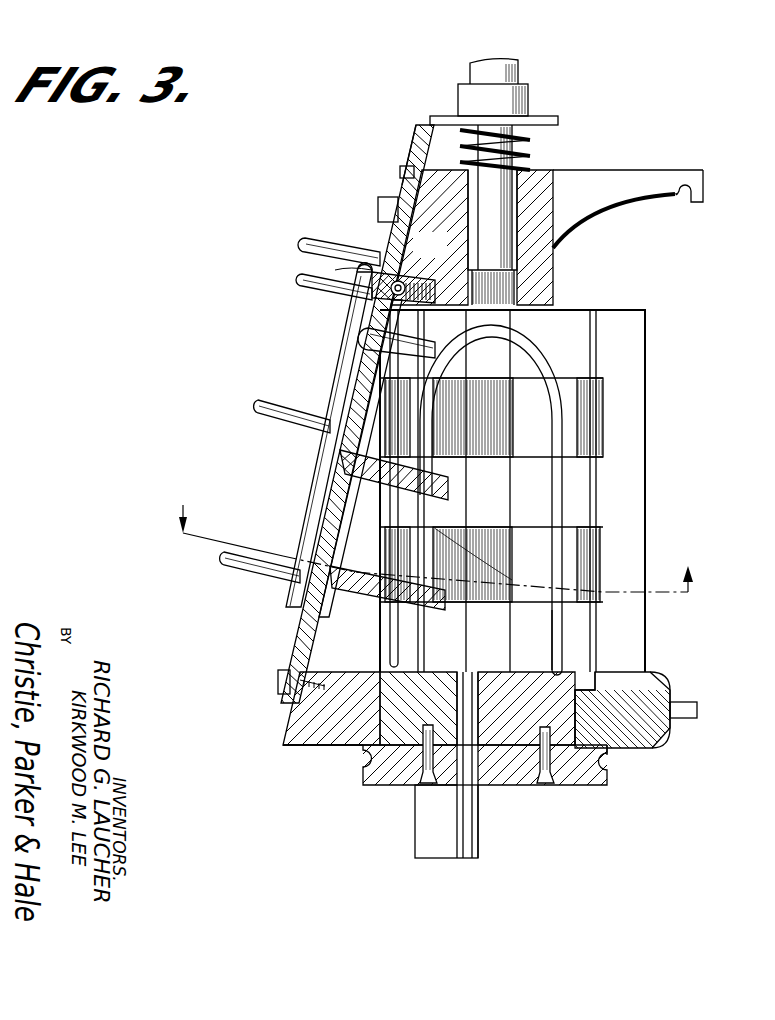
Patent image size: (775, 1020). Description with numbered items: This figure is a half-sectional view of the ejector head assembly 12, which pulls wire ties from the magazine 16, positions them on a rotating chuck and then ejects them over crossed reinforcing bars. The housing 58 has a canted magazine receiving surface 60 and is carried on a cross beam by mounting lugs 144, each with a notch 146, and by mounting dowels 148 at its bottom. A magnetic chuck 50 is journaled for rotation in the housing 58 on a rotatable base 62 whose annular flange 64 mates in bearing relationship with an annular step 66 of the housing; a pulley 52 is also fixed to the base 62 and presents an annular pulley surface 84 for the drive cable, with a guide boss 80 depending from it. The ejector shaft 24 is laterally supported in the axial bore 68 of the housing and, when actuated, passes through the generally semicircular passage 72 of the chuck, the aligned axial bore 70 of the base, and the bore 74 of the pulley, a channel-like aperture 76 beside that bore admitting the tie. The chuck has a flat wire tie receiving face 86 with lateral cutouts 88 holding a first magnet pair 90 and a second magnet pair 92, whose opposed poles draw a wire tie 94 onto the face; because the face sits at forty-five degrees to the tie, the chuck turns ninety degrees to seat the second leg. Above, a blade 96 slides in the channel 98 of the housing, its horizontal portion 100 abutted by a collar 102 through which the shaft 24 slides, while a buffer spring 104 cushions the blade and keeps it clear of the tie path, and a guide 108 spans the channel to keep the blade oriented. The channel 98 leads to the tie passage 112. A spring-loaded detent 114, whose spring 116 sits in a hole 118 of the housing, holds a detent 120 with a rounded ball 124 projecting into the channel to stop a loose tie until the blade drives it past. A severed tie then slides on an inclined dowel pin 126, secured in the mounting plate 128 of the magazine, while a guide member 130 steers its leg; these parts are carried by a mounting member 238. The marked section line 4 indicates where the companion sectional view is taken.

The ejector head assembly 12 is at (600, 162).
The magazine 16 is at (272, 302).
The ejector shaft 24 is at (522, 76).
The magnetic chuck 50 is at (647, 390).
The pulley 52 is at (608, 790).
The housing 58 is at (557, 226).
The canted magazine receiving surface 60 is at (283, 710).
The rotatable base 62 is at (362, 760).
The annular flange 64 is at (648, 676).
The annular step 66 is at (672, 697).
The axial bore 68 is at (520, 300).
The axial bore 70 is at (494, 662).
The passage 72 is at (496, 496).
The bore 74 is at (500, 803).
The channel-like aperture 76 is at (478, 856).
The guide boss 80 is at (440, 822).
The annular pulley surface 84 is at (612, 765).
The wire tie receiving face 86 is at (590, 638).
The lateral cutouts 88 is at (605, 540).
The first magnet pair 90 is at (508, 422).
The second magnet pair 92 is at (540, 568).
The wire tie 94 is at (462, 640).
The blade 96 is at (420, 128).
The channel 98 is at (408, 182).
The horizontal portion 100 is at (560, 121).
The collar 102 is at (532, 102).
The buffer spring 104 is at (533, 150).
The guide 108 is at (376, 208).
The tie passage 112 is at (368, 646).
The spring-loaded detent 114 is at (400, 330).
The spring 116 is at (392, 306).
The hole 118 is at (442, 270).
The detent 120 is at (378, 250).
The rounded ball 124 is at (350, 268).
The inclined dowel pin 126 is at (388, 350).
The mounting plate 128 is at (345, 432).
The guide member 130 is at (358, 492).
The mounting lugs 144 is at (697, 172).
The notch 146 is at (683, 200).
The mounting dowels 148 is at (699, 712).
The mounting member 238 is at (348, 480).
The section line 4- 4 is at (433, 538).